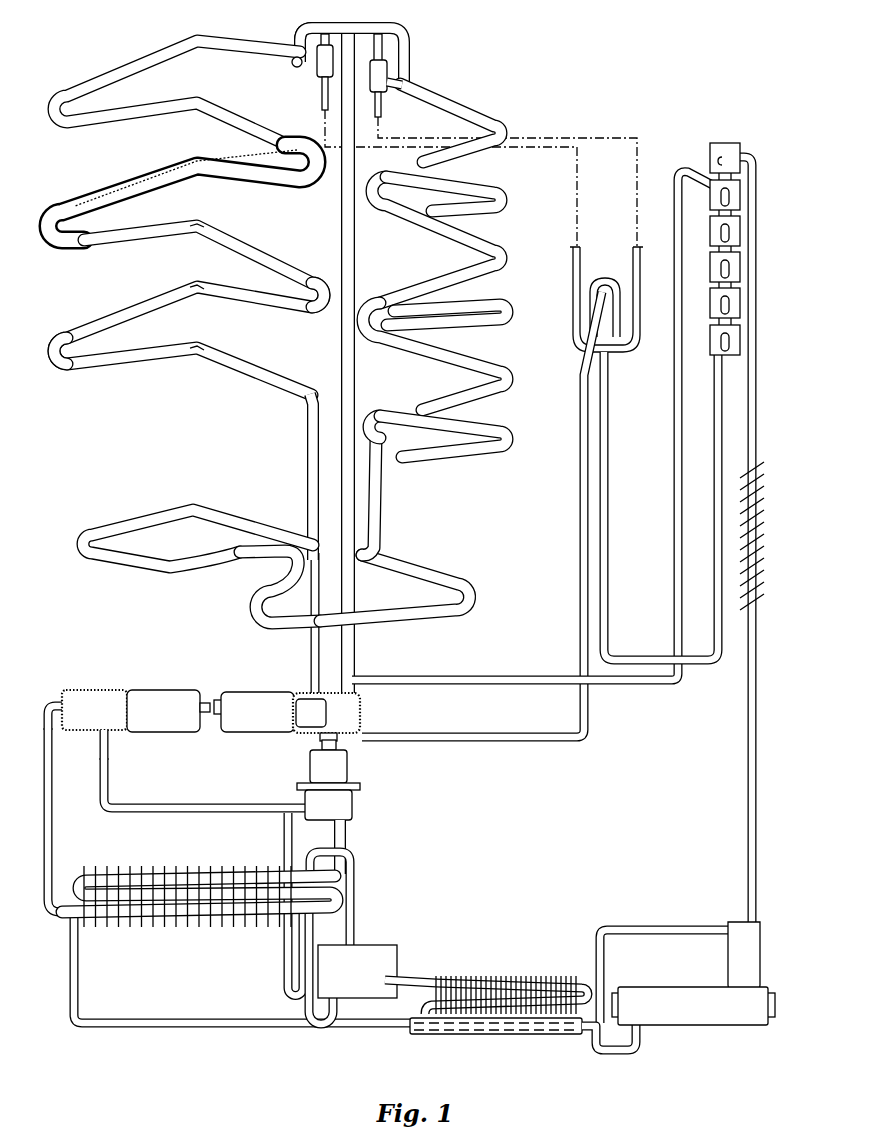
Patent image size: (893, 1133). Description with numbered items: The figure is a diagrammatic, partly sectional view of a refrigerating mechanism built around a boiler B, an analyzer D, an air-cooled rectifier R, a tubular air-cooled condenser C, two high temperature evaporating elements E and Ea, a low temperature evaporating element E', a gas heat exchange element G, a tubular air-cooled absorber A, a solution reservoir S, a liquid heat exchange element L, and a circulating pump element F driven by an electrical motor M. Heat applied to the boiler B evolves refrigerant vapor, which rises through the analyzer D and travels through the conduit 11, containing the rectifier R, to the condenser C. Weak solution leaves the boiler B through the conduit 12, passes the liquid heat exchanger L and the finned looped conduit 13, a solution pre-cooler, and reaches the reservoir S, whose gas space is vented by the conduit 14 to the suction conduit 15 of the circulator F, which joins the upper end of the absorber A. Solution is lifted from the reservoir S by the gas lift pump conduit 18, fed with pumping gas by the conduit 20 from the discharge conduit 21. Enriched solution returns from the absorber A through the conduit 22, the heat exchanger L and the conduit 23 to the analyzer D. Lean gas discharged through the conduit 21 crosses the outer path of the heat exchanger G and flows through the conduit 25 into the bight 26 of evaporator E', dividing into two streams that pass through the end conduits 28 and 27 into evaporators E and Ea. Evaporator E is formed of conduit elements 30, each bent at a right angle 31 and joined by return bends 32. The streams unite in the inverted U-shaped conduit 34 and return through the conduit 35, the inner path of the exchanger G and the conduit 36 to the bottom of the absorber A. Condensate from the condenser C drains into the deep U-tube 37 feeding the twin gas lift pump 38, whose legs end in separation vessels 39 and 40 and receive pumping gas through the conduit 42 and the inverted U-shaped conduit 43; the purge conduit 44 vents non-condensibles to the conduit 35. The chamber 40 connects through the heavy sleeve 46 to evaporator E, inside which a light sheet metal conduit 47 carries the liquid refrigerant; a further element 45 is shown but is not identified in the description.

The conduit 11 is at (758, 715).
The conduit 12 is at (600, 1052).
The finned looped conduit 13 is at (412, 978).
The conduit 14 is at (356, 890).
The suction conduit 15 is at (348, 832).
The gas lift pump conduit 18 is at (312, 925).
The conduit 20 is at (283, 952).
The discharge conduit 21 is at (256, 800).
The conduit 22 is at (238, 1020).
The conduit 23 is at (640, 928).
The conduit 25 is at (310, 663).
The bight or U-shaped portion 26 is at (272, 552).
The end conduit 27 is at (384, 553).
The end conduit 28 is at (306, 530).
The conduit elements 30 is at (130, 234).
The right-angular bend 31 is at (197, 228).
The return bends 32 is at (320, 308).
The inverted U-shaped conduit element 34 is at (350, 25).
The rich gas return conduit 35 is at (360, 376).
The conduit 36 is at (56, 833).
The deep U-tube 37 is at (688, 658).
The twin gas lift pump 38 is at (580, 246).
The gas and liquid separation vessel 39 is at (388, 74).
The gas and liquid separation vessel 40 is at (318, 76).
The conduit 42 is at (520, 745).
The inverted U-shaped conduit 43 is at (582, 280).
The purge conduit 44 is at (458, 680).
The header bend 45 is at (300, 38).
The conduit or sleeve element 46 is at (295, 72).
The sheet metal conduit 47 is at (148, 175).
The tubular air-cooled absorber A is at (225, 870).
The boiler B is at (693, 1006).
The tubular air-cooled condenser C is at (735, 230).
The analyzer D is at (744, 957).
The high temperature evaporating element E is at (177, 170).
The high temperature evaporating element Ea is at (480, 272).
The low temperature evaporating element E' is at (198, 560).
The circulating pump element F is at (328, 802).
The gas heat exchange element G is at (245, 690).
The liquid heat exchange element L is at (490, 1033).
The electrical motor M is at (328, 758).
The air-cooled rectifier R is at (758, 530).
The solution reservoir S is at (357, 971).